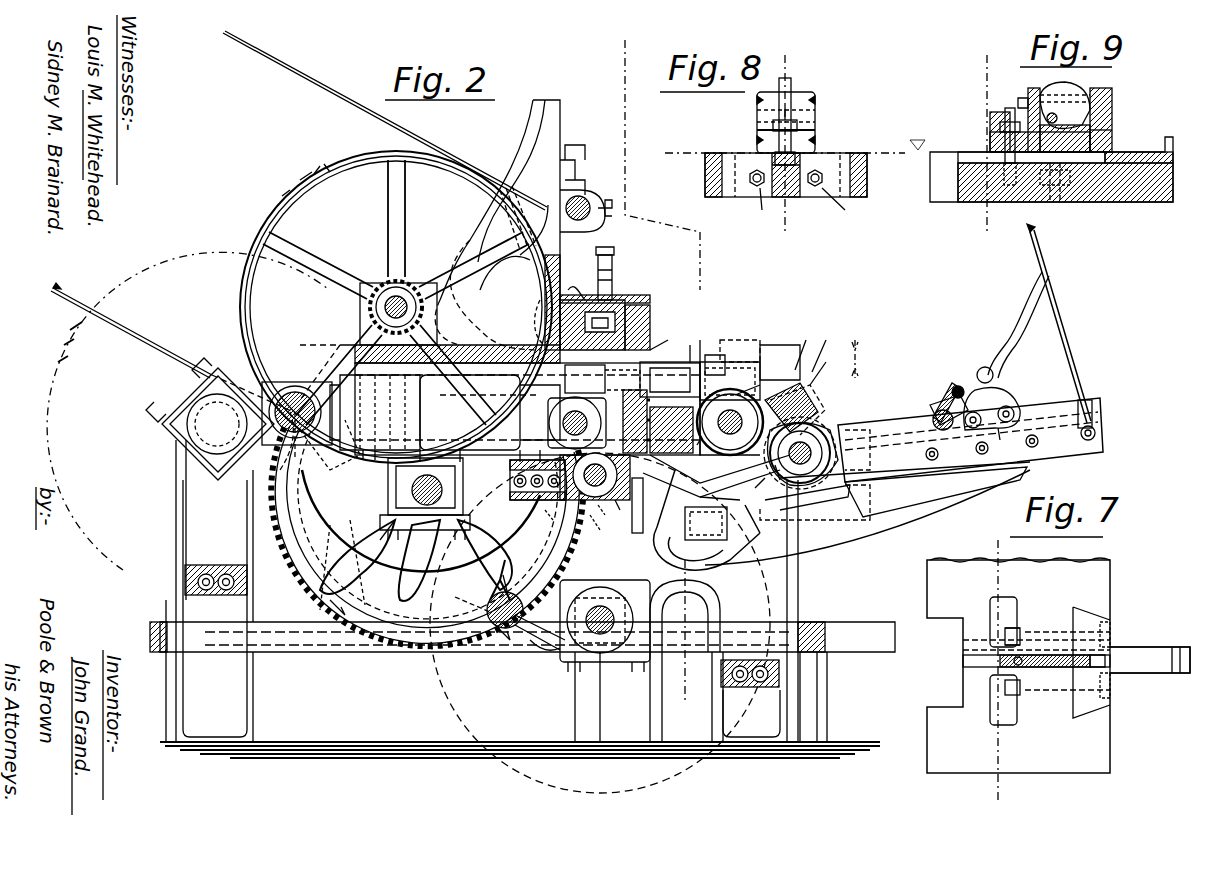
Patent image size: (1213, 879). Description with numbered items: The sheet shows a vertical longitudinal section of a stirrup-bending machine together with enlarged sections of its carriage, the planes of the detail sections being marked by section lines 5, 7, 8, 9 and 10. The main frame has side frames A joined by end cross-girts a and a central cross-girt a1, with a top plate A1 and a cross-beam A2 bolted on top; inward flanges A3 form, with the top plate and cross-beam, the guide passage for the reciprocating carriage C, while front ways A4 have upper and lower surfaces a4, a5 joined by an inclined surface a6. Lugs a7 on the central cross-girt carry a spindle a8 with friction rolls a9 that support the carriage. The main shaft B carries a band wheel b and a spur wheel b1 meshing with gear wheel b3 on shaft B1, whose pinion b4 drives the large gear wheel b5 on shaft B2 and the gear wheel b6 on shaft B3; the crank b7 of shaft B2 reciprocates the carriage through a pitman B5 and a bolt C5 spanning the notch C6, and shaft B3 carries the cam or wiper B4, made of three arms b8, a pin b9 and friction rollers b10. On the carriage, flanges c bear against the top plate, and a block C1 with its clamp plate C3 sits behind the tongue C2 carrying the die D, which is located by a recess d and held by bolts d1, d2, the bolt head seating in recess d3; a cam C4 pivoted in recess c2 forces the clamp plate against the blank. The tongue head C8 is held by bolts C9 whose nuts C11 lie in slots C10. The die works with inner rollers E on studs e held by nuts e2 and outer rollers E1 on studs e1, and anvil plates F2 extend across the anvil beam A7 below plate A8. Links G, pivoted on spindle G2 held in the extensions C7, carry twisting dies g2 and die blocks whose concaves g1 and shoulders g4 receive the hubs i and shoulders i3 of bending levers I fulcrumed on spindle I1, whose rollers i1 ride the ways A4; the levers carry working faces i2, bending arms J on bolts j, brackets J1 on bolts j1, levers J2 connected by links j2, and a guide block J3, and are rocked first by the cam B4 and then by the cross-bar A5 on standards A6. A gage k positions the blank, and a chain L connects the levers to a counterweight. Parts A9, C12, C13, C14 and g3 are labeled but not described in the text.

In FIG. 2, the side frame A is at (522, 429).
In FIG. 2, the top plate A1 is at (497, 295).
In FIG. 2, the cross-beam A2 is at (632, 312).
In FIG. 2, the inwardly projecting flange A3 is at (720, 481).
In FIG. 2, the horizontal flange or way A4 is at (706, 514).
In FIG. 2, the cross-bar A5 is at (580, 206).
In FIG. 2, the standard A6 is at (488, 240).
In FIG. 2, the anvil beam A7 is at (610, 295).
In FIG. 2, the plate A8 is at (570, 295).
In FIG. 2, the bolt plate A9 is at (510, 475).
In FIG. 2, the end cross-girt a is at (226, 570).
In FIG. 2, the central cross-girt a1 is at (546, 520).
In FIG. 2, the upper horizontal surface a4 is at (618, 509).
In FIG. 2, the lower horizontal surface a5 is at (645, 510).
In FIG. 2, the inclined connecting surface a6 is at (716, 476).
In FIG. 2, the forwardly projecting lug a7 is at (600, 519).
In FIG. 2, the spindle a8 is at (606, 530).
In FIG. 2, the friction roll a9 is at (602, 476).
In FIG. 2, the main shaft B is at (346, 318).
In FIG. 2, the second transverse shaft B1 is at (288, 407).
In FIG. 2, the transverse shaft B2 is at (200, 445).
In FIG. 2, the transverse shaft B3 is at (570, 665).
In FIG. 2, the cam or wiper B4 is at (526, 605).
In FIG. 2, the pitman B5 is at (515, 412).
In FIG. 2, the band wheel b is at (358, 160).
In FIG. 2, the spur wheel b1 is at (418, 283).
In FIG. 2, the gear wheel b3 is at (352, 348).
In FIG. 2, the pinion b4 is at (380, 540).
In FIG. 2, the large gear wheel b5 is at (192, 250).
In FIG. 2, the gear wheel b6 is at (590, 795).
In FIG. 2, the crank b7 is at (175, 349).
In FIG. 2, the parallel arm b8 is at (545, 655).
In FIG. 2, the pin b9 is at (495, 605).
In FIG. 2, the friction roller b10 is at (503, 580).
In FIG. 8, the reciprocating carriage C is at (786, 162).
In FIG. 9, the reciprocating carriage C is at (1051, 162).
In FIG. 7, the reciprocating carriage C is at (1058, 665).
In FIG. 2, the block C1 is at (552, 418).
In FIG. 8, the block C1 is at (800, 112).
In FIG. 2, the tongue C2 is at (700, 365).
In FIG. 9, the tongue C2 is at (1048, 95).
In FIG. 2, the clamp plate C3 is at (690, 345).
In FIG. 8, the clamp plate C3 is at (758, 138).
In FIG. 9, the clamp plate C3 is at (1115, 128).
In FIG. 2, the cam C4 is at (700, 340).
In FIG. 8, the cam C4 is at (775, 163).
In FIG. 9, the cam C4 is at (968, 160).
In FIG. 7, the cam C4 is at (963, 668).
In FIG. 8, the bolt C5 is at (798, 160).
In FIG. 9, the bolt C5 is at (1020, 100).
In FIG. 7, the bolt C5 is at (1042, 645).
In FIG. 2, the deep notch C6 is at (500, 400).
In FIG. 8, the deep notch C6 is at (791, 102).
In FIG. 9, the deep notch C6 is at (1005, 123).
In FIG. 7, the deep notch C6 is at (960, 640).
In FIG. 8, the extension C7 is at (778, 128).
In FIG. 9, the extension C7 is at (1003, 124).
In FIG. 2, the head of tongue block C8 is at (711, 431).
In FIG. 7, the head of tongue block C8 is at (1067, 662).
In FIG. 8, the horizontal bolt C9 is at (755, 188).
In FIG. 9, the horizontal bolt C9 is at (1055, 202).
In FIG. 7, the horizontal bolt C9 is at (1003, 635).
In FIG. 8, the vertical slot C10 is at (797, 176).
In FIG. 9, the vertical slot C10 is at (950, 182).
In FIG. 7, the vertical slot C10 is at (1012, 600).
In FIG. 8, the nut C11 is at (812, 210).
In FIG. 7, the nut C11 is at (1012, 632).
In FIG. 9, the bar C12 is at (990, 135).
In FIG. 7, the bar C12 is at (1158, 655).
In FIG. 9, the block C13 is at (1100, 113).
In FIG. 8, the cam C14 is at (771, 105).
In FIG. 9, the cam C14 is at (1062, 117).
In FIG. 2, the flange c is at (622, 375).
In FIG. 2, the recess c2 is at (658, 416).
In FIG. 2, the die or former D is at (735, 365).
In FIG. 2, the recess d is at (775, 365).
In FIG. 2, the bolt d1 is at (810, 343).
In FIG. 2, the bolt d2 is at (828, 362).
In FIG. 2, the recess d3 is at (829, 344).
In FIG. 2, the inner roller E is at (585, 377).
In FIG. 2, the outer roller E1 is at (660, 374).
In FIG. 2, the vertical stud e is at (598, 322).
In FIG. 2, the stud e1 is at (669, 334).
In FIG. 2, the clamping nut e2 is at (533, 322).
In FIG. 2, the anvil plate F2 is at (635, 330).
In FIG. 2, the link G is at (730, 422).
In FIG. 2, the spindle G2 is at (746, 397).
In FIG. 2, the concave surface g1 is at (808, 440).
In FIG. 2, the twisting die g2 is at (805, 405).
In FIG. 2, the cam g3 is at (815, 385).
In FIG. 2, the shoulder g4 is at (752, 477).
In FIG. 2, the bending lever I is at (970, 457).
In FIG. 2, the spindle I1 is at (826, 430).
In FIG. 2, the cylindric hub i is at (773, 465).
In FIG. 2, the roller i1 is at (800, 453).
In FIG. 2, the detachable plate i2 is at (870, 432).
In FIG. 2, the shoulder i3 is at (782, 488).
In FIG. 2, the bending arm J is at (945, 410).
In FIG. 2, the bracket J1 is at (998, 400).
In FIG. 2, the lever J2 is at (1010, 340).
In FIG. 2, the U-shaped block J3 is at (930, 400).
In FIG. 2, the bolt j is at (947, 432).
In FIG. 2, the bolt j1 is at (998, 439).
In FIG. 2, the link j2 is at (960, 375).
In FIG. 2, the gage k is at (715, 355).
In FIG. 2, the rope or chain L is at (1065, 333).
In FIG. 2, the section line 5 is at (862, 359).
In FIG. 8, the section line 7 is at (906, 142).
In FIG. 9, the section line 7 is at (914, 149).
In FIG. 9, the section line 8 is at (997, 228).
In FIG. 7, the section line 8 is at (1012, 790).
In FIG. 8, the section line 9 is at (770, 230).
In FIG. 2, the section line 10 is at (695, 702).